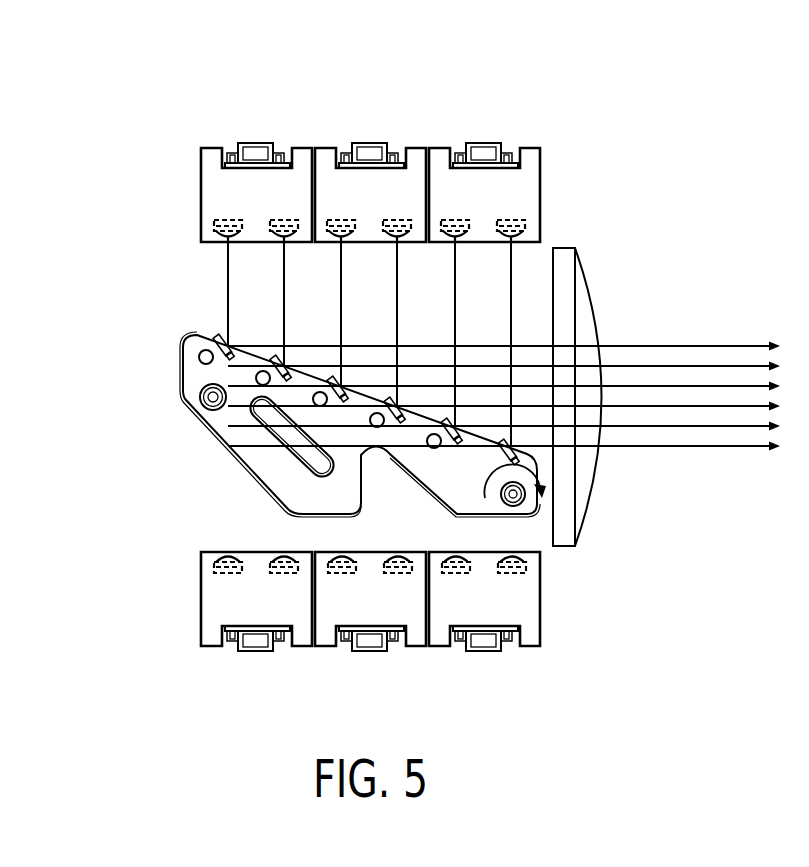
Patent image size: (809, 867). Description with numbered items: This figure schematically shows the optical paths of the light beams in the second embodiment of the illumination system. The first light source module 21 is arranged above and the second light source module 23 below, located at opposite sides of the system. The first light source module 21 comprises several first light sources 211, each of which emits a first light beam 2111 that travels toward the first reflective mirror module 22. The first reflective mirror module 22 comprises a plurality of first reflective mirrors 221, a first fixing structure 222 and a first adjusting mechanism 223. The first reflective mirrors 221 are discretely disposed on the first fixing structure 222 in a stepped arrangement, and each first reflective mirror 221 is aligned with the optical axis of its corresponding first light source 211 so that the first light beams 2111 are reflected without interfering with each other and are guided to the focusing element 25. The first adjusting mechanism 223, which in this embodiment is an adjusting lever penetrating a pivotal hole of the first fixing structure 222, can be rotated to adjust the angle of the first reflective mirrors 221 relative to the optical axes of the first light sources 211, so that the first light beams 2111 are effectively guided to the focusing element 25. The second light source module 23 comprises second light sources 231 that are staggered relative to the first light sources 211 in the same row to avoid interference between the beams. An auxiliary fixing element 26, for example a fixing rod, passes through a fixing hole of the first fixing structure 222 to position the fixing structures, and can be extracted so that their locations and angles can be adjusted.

The first light source module 21 is at (512, 82).
The first light source 211 is at (510, 222).
The first light beam 2111 is at (227, 291).
The first reflective mirror module 22 is at (457, 474).
The first reflective mirror 221 is at (512, 456).
The first fixing structure 222 is at (463, 492).
The first adjusting mechanism 223 is at (517, 500).
The second light source module 23 is at (513, 685).
The second light source 231 is at (513, 576).
The focusing element 25 is at (593, 358).
The auxiliary fixing element 26 is at (205, 392).